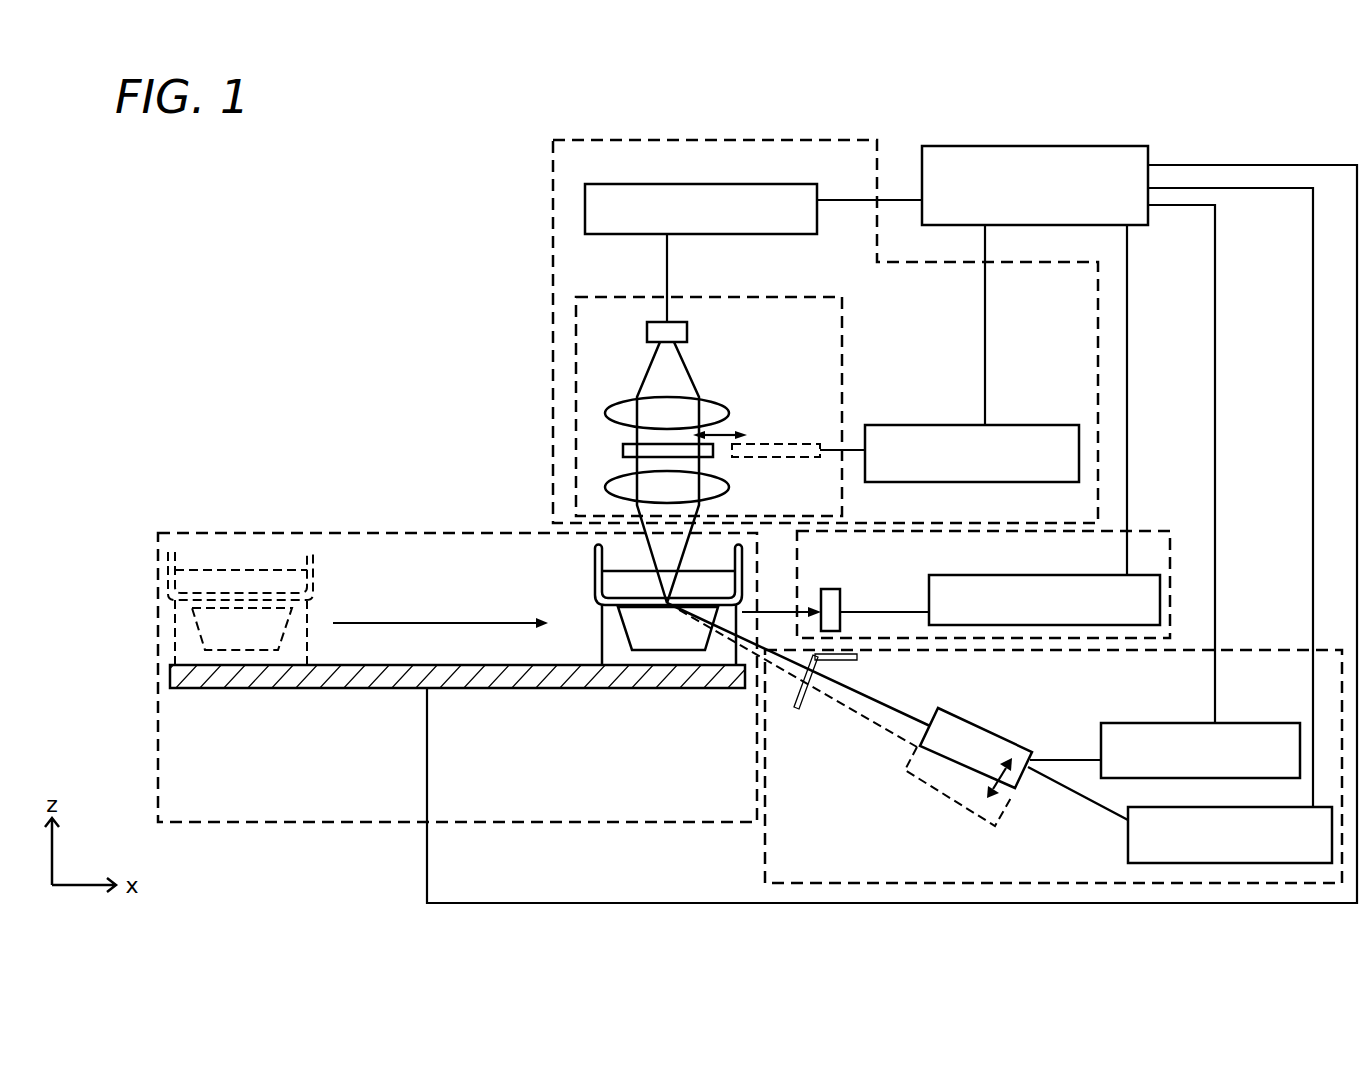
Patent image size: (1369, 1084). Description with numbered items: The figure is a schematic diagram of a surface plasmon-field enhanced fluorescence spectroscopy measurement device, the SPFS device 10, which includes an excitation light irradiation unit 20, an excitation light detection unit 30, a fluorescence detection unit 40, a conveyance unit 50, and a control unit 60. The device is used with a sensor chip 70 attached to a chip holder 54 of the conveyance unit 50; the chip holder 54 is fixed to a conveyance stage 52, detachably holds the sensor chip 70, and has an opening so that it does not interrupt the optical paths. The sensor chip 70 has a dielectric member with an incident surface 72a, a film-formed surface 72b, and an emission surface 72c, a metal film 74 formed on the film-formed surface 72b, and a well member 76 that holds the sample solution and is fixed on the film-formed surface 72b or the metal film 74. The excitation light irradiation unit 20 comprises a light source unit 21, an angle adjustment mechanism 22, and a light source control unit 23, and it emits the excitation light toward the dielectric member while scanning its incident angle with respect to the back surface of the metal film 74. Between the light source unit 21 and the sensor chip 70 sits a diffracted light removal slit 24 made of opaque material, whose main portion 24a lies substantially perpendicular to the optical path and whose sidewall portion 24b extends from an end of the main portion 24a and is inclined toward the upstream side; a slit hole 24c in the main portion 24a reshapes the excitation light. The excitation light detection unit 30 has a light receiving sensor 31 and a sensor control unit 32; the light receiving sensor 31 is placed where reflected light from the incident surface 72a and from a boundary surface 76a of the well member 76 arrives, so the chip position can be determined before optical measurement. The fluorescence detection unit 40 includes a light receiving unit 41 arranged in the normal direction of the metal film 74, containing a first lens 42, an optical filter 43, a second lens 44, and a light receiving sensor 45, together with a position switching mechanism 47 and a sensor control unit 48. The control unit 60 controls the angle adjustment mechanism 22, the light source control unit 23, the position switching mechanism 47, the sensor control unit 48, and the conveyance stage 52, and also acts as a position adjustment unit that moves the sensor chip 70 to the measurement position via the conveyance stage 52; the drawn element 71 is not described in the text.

The SPFS device 10 is at (1244, 104).
The excitation light irradiation unit 20 is at (1094, 883).
The light source unit 21 is at (970, 760).
The angle adjustment mechanism 22 is at (1101, 732).
The light source control unit 23 is at (1228, 863).
The diffracted light removal slit 24 is at (870, 723).
The main portion 24a is at (812, 680).
The sidewall portion 24b is at (858, 657).
The slit hole 24c is at (797, 710).
The excitation light detection unit 30 is at (1148, 531).
The light receiving sensor 31 is at (841, 598).
The sensor control unit 32 is at (980, 575).
The fluorescence detection unit 40 is at (818, 140).
The light receiving unit 41 is at (576, 303).
The first lens 42 is at (605, 487).
The optical filter 43 is at (623, 450).
The second lens 44 is at (605, 413).
The light receiving sensor 45 is at (647, 331).
The position switching mechanism 47 is at (1040, 425).
The sensor control unit 48 is at (663, 184).
The conveyance unit 50 is at (372, 822).
The conveyance stage 52 is at (310, 688).
The chip holder 54 is at (610, 625).
The control unit 60 is at (1103, 146).
The sensor chip 70 is at (672, 752).
The processing point 71 is at (688, 607).
The incident surface 72a is at (714, 633).
The film-formed surface 72b is at (678, 650).
The emission surface 72c is at (660, 630).
The metal film 74 is at (643, 606).
The well member 76 is at (594, 588).
The boundary surface 76a is at (746, 600).